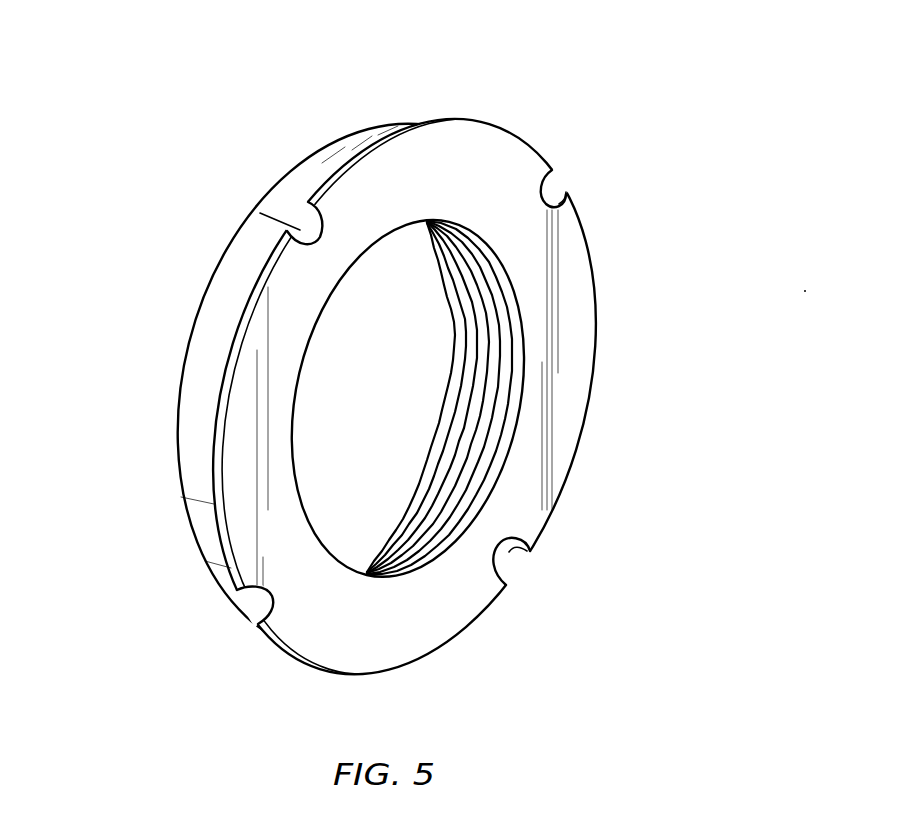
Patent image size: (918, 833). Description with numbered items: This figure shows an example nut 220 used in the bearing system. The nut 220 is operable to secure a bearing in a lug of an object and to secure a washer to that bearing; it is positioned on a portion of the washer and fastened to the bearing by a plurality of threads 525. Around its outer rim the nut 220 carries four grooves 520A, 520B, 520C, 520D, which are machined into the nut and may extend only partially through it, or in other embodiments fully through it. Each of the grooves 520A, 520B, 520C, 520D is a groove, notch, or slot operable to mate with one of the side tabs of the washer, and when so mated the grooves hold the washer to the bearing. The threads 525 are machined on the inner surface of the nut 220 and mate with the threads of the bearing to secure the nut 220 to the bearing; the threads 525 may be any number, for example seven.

The nut 220 is at (242, 86).
The groove 520A is at (267, 602).
The groove 520B is at (310, 233).
The groove 520C is at (548, 197).
The groove 520D is at (500, 553).
The plurality of threads 525 is at (483, 442).